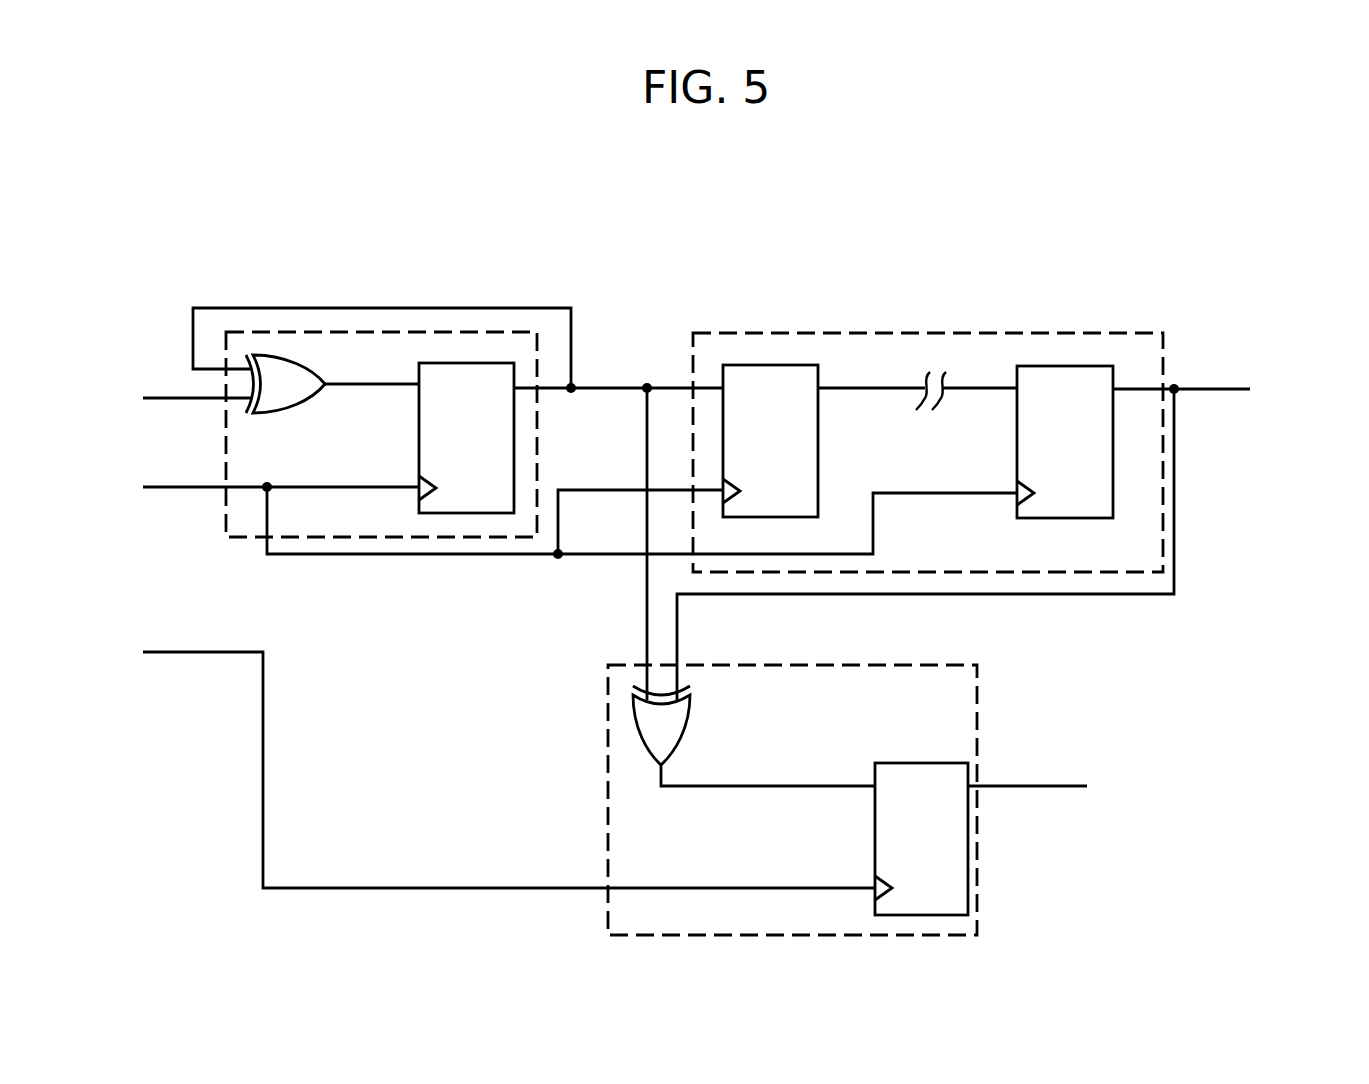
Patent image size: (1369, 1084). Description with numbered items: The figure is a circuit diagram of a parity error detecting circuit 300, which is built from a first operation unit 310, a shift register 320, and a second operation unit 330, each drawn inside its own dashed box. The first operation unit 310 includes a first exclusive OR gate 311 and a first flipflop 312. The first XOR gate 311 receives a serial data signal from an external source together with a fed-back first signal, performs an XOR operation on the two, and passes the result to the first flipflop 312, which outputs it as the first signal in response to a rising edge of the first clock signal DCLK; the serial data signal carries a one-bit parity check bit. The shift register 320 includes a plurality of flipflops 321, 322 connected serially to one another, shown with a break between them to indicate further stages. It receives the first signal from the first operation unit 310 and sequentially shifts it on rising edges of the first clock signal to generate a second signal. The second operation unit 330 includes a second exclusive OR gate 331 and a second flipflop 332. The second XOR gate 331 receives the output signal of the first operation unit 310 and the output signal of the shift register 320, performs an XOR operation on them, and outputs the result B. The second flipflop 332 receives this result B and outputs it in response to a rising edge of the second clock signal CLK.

The parity error detecting circuit 300 is at (1286, 306).
The first operation unit 310 is at (398, 333).
The first exclusive OR (XOR) gate 311 is at (296, 412).
The first flipflop 312 is at (515, 441).
The shift register 320 is at (960, 334).
The flipflop 321 is at (818, 441).
The flipflop 322 is at (1085, 518).
The second operation unit 330 is at (977, 719).
The second exclusive OR (XOR) gate 331 is at (690, 718).
The second flipflop 332 is at (875, 825).